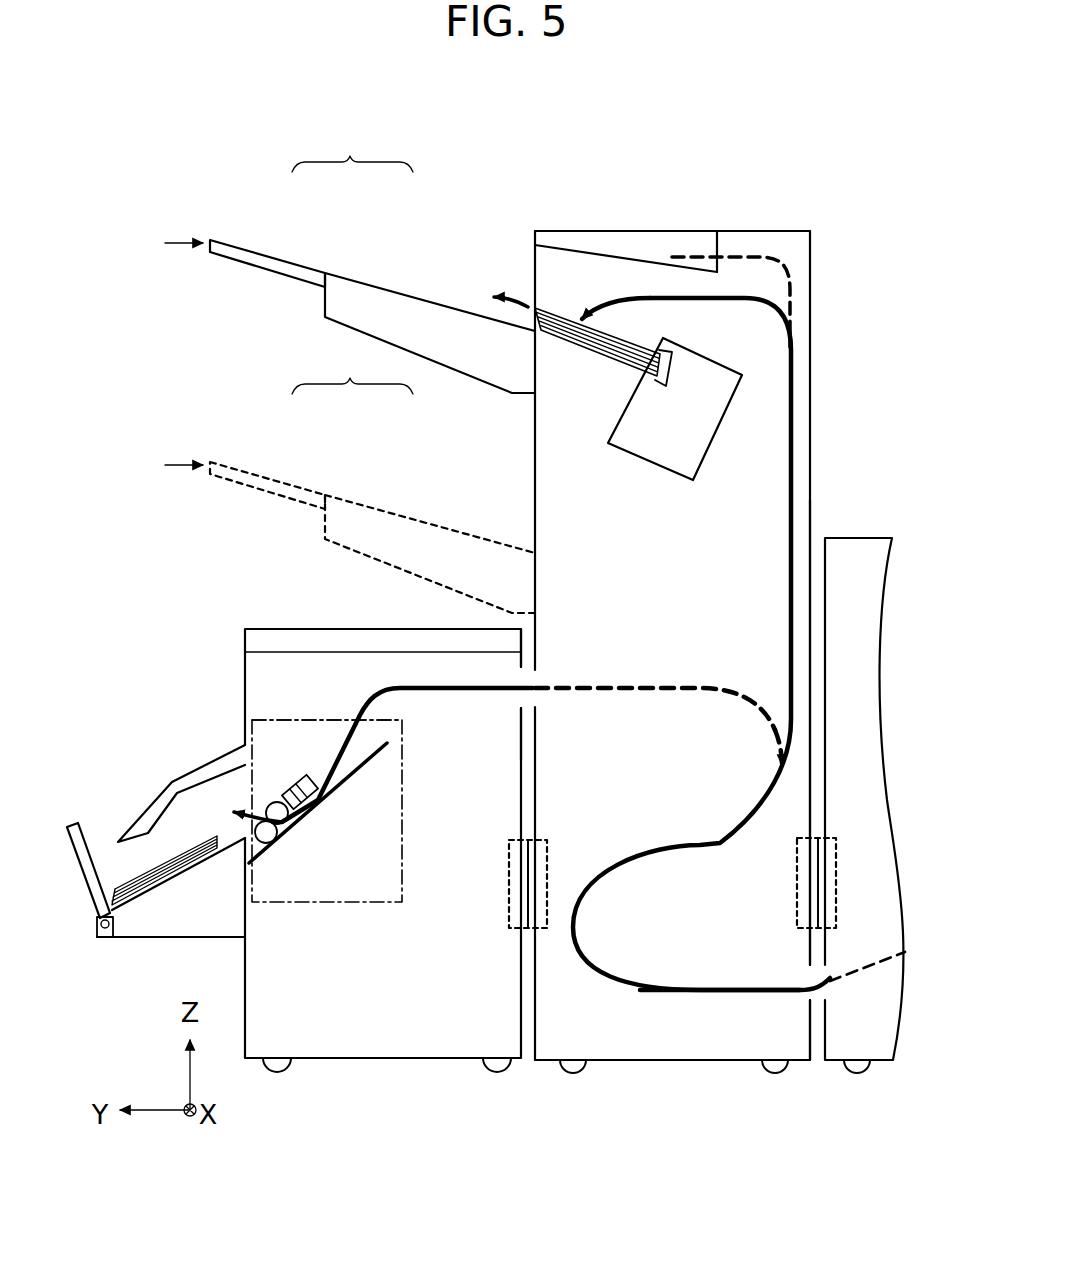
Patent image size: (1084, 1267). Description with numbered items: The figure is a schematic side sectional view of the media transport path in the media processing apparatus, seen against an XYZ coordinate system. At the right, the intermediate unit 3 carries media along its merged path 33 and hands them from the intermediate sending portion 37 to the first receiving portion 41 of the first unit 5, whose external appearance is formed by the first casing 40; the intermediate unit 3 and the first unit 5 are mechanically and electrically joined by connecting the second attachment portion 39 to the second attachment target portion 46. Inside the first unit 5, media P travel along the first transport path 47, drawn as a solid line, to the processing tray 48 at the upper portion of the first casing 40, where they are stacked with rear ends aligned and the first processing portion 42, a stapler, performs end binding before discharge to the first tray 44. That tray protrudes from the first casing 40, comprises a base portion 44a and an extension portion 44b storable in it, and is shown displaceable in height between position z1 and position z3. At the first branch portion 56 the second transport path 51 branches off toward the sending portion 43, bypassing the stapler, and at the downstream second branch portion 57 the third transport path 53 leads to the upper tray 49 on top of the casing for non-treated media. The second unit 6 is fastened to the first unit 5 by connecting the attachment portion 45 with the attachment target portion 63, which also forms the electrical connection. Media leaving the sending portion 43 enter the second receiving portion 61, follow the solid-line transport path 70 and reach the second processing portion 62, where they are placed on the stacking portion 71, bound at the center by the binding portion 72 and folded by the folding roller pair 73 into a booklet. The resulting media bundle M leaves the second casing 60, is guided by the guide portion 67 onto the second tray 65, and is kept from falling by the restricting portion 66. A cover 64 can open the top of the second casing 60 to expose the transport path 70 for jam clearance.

The intermediate unit 3 is at (856, 512).
The first unit 5 is at (652, 180).
The second unit 6 is at (248, 606).
The merged path 33 is at (873, 968).
The intermediate sending portion 37 is at (834, 967).
The second attachment portion 39 is at (838, 873).
The first casing 40 is at (812, 306).
The first receiving portion 41 is at (806, 975).
The first processing portion 42 is at (628, 455).
The sending portion 43 is at (541, 677).
The first tray 44 is at (352, 256).
The base portion 44a is at (358, 282).
The extension portion 44b is at (290, 263).
The attachment portion 45 is at (547, 882).
The second attachment target portion 46 is at (797, 858).
The first transport path 47 is at (752, 993).
The processing tray 48 is at (598, 357).
The upper tray 49 is at (625, 257).
The second transport path 51 is at (650, 683).
The third transport path 53 is at (770, 257).
The first branch portion 56 is at (783, 742).
The second branch portion 57 is at (797, 352).
The second casing 60 is at (243, 710).
The second receiving portion 61 is at (511, 676).
The second processing portion 62 is at (297, 718).
The attachment target portion 63 is at (509, 887).
The cover 64 is at (282, 629).
The second tray 65 is at (138, 888).
The restricting portion 66 is at (73, 863).
The guide portion 67 is at (145, 810).
The transport path 70 is at (355, 713).
The stacking portion 71 is at (362, 768).
The binding portion 72 is at (318, 778).
The folding roller pair 73 is at (268, 799).
The media P is at (552, 307).
The media bundle M is at (130, 893).
The position z1 is at (167, 243).
The position z3 is at (167, 465).